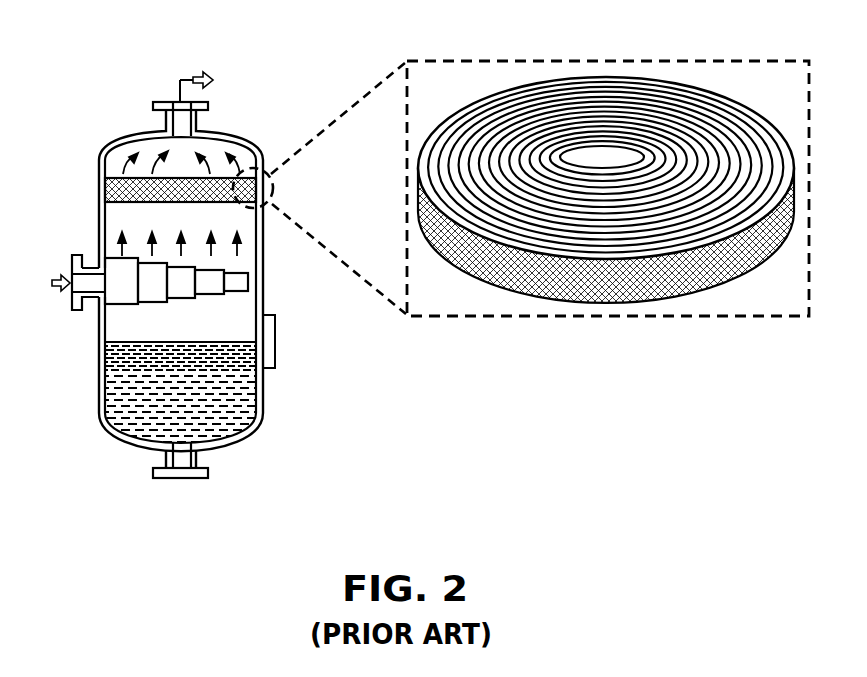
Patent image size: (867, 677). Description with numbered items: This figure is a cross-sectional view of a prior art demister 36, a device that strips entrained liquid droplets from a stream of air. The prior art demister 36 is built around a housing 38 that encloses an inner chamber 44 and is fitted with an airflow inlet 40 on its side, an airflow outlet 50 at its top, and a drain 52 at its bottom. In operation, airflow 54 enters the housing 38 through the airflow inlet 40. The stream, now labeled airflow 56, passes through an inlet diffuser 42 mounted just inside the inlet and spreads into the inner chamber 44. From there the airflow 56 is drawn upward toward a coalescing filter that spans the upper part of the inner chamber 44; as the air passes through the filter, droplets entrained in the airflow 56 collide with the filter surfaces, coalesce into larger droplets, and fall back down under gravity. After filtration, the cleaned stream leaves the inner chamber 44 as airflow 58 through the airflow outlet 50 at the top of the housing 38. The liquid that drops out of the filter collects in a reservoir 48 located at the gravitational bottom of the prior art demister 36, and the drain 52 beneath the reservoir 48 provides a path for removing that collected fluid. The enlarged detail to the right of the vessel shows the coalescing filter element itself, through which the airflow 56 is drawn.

The prior art demister 36 is at (115, 80).
The housing 38 is at (112, 146).
The airflow inlet 40 is at (72, 255).
The inlet diffuser 42 is at (153, 308).
The inner chamber 44 is at (202, 337).
The reservoir 48 is at (88, 393).
The airflow outlet 50 is at (208, 105).
The drain 52 is at (153, 472).
The airflow 54 is at (52, 283).
The airflow 56 is at (246, 254).
The airflow 58 is at (180, 80).